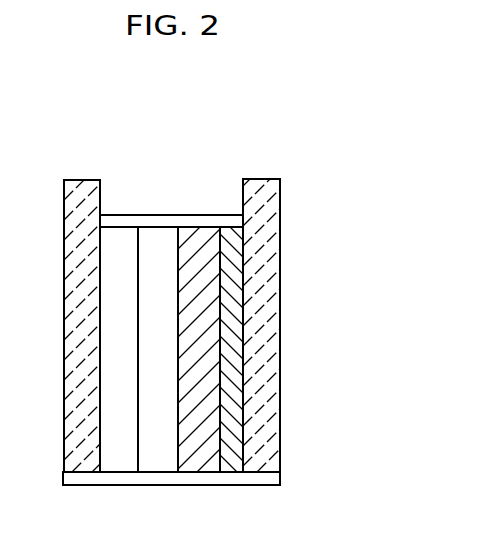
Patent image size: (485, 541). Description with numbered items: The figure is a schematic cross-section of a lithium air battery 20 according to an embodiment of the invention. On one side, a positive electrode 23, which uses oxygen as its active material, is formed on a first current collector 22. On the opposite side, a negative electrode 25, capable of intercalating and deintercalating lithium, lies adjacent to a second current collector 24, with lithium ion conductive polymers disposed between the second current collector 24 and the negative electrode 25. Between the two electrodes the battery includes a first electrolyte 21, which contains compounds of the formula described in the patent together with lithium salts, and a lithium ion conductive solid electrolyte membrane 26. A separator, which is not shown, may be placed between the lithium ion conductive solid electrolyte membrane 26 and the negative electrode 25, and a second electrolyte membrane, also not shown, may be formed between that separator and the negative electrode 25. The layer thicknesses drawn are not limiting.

The lithium air battery 20 is at (309, 171).
The first electrolyte 21 is at (161, 235).
The first current collector 22 is at (82, 180).
The positive electrode 23 is at (121, 235).
The second current collector 24 is at (262, 180).
The negative electrode 25 is at (231, 235).
The lithium ion conductive solid electrolyte membrane 26 is at (200, 235).